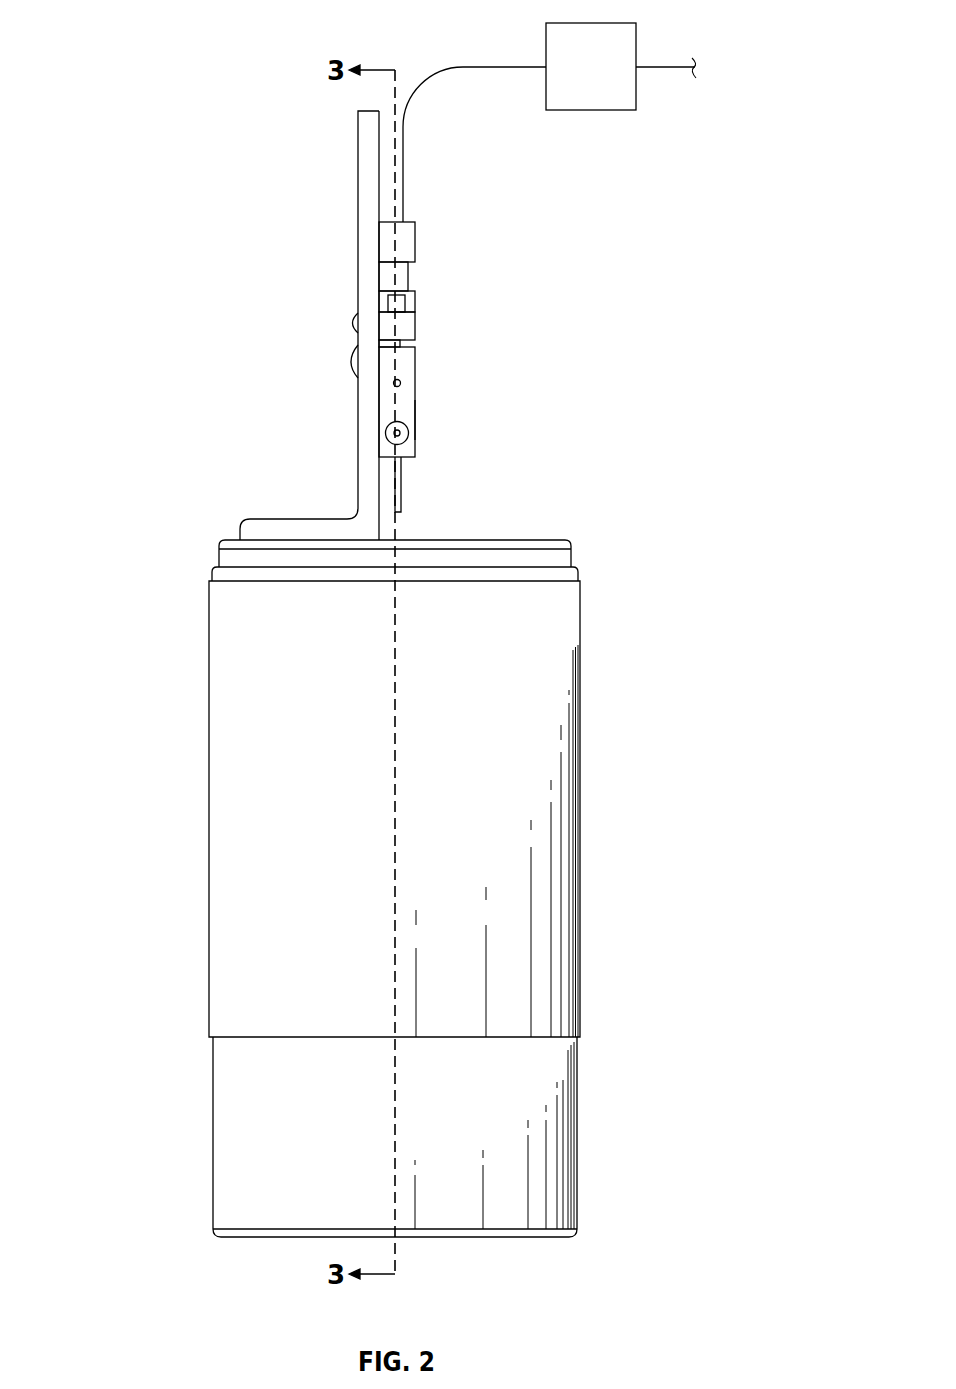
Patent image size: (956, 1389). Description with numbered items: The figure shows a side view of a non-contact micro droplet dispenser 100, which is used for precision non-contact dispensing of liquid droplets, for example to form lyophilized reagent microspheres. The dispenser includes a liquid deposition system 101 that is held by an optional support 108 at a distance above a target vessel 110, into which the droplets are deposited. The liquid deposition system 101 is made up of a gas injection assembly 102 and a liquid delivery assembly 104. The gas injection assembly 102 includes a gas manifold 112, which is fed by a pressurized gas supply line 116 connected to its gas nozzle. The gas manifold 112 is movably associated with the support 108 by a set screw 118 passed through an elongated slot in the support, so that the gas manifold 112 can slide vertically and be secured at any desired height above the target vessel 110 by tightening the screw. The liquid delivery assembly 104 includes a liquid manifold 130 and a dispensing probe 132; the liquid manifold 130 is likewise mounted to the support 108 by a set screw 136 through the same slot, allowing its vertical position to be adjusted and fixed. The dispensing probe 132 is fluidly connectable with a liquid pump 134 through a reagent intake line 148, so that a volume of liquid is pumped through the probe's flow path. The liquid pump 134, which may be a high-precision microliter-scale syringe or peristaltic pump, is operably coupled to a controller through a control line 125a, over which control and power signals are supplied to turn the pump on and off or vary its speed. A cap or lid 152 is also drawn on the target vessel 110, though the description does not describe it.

The non-contact micro droplet dispenser 100 is at (130, 120).
The liquid deposition system 101 is at (416, 365).
The gas injection assembly 102 is at (408, 393).
The liquid delivery assembly 104 is at (406, 328).
The support 108 is at (300, 518).
The target vessel 110 is at (581, 960).
The gas manifold 112 is at (418, 420).
The pressurized gas supply line 116 is at (390, 428).
The set screw 118 is at (352, 360).
The control line 125a is at (659, 65).
The liquid manifold 130 is at (410, 297).
The dispensing probe 132 is at (403, 482).
The liquid pump 134 is at (590, 111).
The set screw 136 is at (350, 323).
The reagent intake line 148 is at (418, 97).
The lid 152 is at (535, 540).